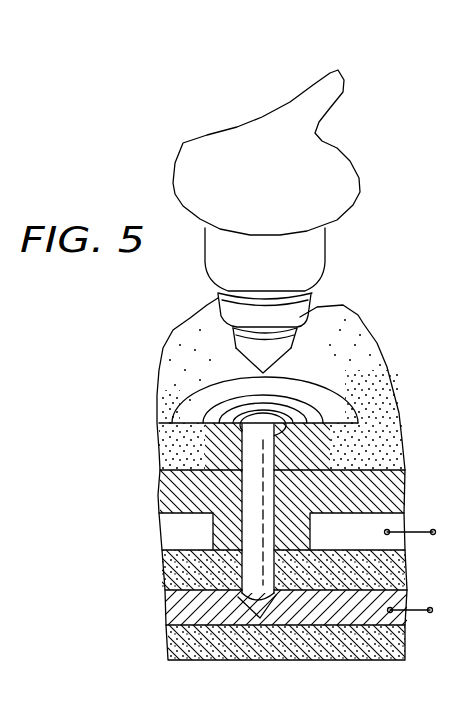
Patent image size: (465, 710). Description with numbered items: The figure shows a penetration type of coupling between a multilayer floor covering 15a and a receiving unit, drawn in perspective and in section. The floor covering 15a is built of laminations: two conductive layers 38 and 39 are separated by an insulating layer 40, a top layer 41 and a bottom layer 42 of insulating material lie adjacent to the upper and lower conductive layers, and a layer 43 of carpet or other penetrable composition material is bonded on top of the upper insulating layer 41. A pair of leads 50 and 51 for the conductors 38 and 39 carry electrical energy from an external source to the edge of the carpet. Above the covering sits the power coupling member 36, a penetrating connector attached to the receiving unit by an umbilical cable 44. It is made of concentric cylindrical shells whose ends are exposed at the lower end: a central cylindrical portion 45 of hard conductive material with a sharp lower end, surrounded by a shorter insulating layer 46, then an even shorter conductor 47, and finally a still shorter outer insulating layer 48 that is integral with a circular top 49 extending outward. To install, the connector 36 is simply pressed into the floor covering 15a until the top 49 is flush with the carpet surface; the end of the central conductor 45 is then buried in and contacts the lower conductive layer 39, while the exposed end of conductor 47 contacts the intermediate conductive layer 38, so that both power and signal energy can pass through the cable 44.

The floor covering 15a is at (285, 479).
The power coupling member 36 is at (224, 218).
The conductive layer 38 is at (165, 530).
The conductive layer 39 is at (170, 605).
The insulating layer 40 is at (170, 568).
The top layer 41 is at (162, 491).
The bottom layer 42 is at (170, 643).
The layer of carpet 43 is at (160, 449).
The umbilical cable 44 is at (343, 92).
The central cylindrical portion 45 is at (258, 557).
The insulating layer 46 is at (287, 418).
The conductor 47 is at (280, 414).
The outer insulating layer 48 is at (232, 390).
The circular top 49 is at (183, 409).
The lead 50 is at (415, 532).
The lead 51 is at (413, 610).